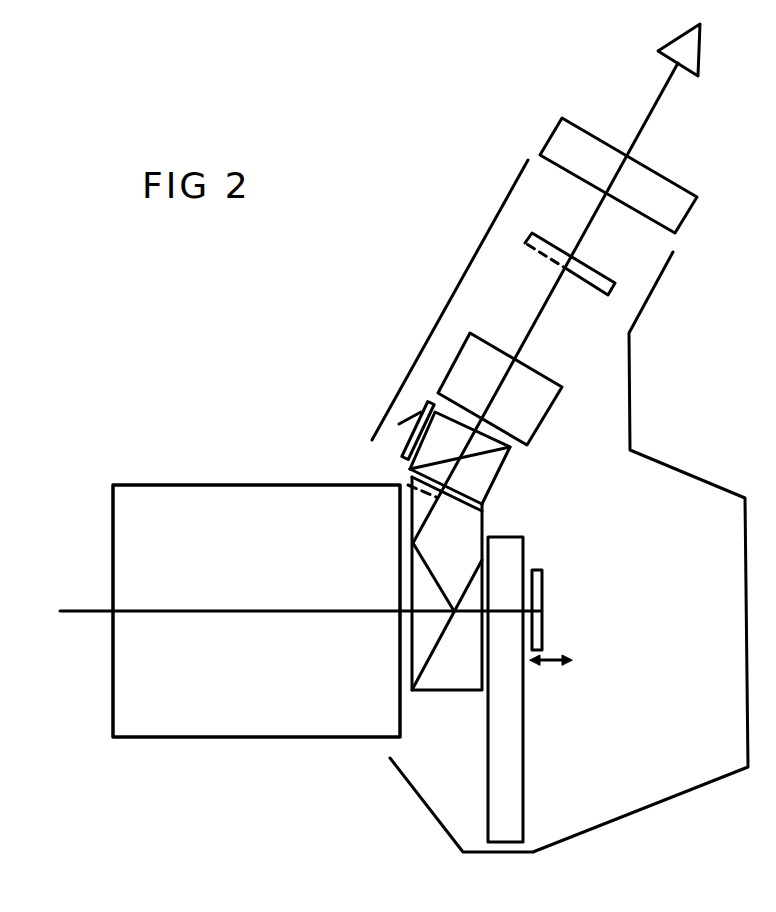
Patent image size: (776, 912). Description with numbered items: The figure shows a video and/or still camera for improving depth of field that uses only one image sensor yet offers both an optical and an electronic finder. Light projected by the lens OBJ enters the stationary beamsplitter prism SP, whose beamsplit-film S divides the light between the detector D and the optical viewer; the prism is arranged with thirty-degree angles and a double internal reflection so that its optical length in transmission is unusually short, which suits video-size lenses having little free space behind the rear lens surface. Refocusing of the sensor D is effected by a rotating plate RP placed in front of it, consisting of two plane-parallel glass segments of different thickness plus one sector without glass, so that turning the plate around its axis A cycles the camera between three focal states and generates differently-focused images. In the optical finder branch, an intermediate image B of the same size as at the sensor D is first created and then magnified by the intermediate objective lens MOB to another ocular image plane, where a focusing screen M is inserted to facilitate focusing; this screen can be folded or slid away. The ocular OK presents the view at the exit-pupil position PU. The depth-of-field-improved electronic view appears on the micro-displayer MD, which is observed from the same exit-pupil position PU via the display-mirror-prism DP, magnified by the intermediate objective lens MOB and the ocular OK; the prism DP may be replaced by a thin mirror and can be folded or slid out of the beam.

The lens OBJ is at (256, 611).
The beamsplitter prism SP is at (465, 700).
The beamsplit-film S is at (437, 668).
The intermediate image B is at (460, 523).
The display-mirror-prism DP is at (472, 458).
The micro-displayer MD is at (405, 431).
The intermediate objective lens MOB is at (520, 389).
The focusing screen M is at (573, 264).
The ocular OK is at (639, 183).
The exit-pupil position PU is at (702, 55).
The rotating plate RP is at (525, 820).
The sensor D is at (552, 648).
The axis A is at (482, 689).